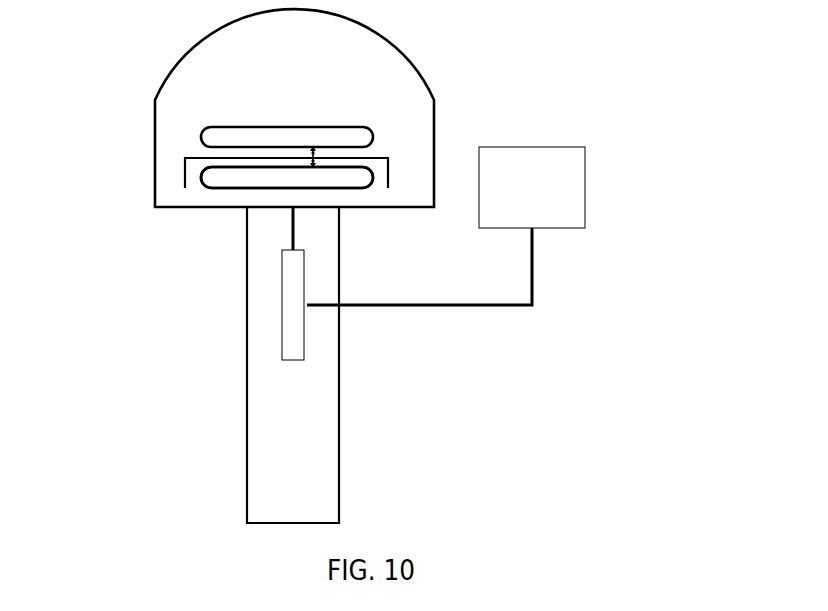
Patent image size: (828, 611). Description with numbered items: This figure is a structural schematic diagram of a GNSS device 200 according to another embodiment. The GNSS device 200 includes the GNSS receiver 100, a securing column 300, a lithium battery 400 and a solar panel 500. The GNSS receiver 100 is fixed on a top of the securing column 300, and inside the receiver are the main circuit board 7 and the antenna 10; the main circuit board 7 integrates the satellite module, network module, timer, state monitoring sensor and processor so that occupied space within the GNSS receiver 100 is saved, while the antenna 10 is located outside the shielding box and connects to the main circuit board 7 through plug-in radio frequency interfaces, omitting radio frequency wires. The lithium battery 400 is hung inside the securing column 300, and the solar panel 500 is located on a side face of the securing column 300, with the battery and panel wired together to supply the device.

The GNSS device 200 is at (102, 47).
The GNSS receiver 100 is at (430, 90).
The antenna 10 is at (285, 127).
The main circuit board 7 is at (247, 190).
The securing column 300 is at (247, 422).
The lithium battery 400 is at (282, 298).
The solar panel 500 is at (585, 177).